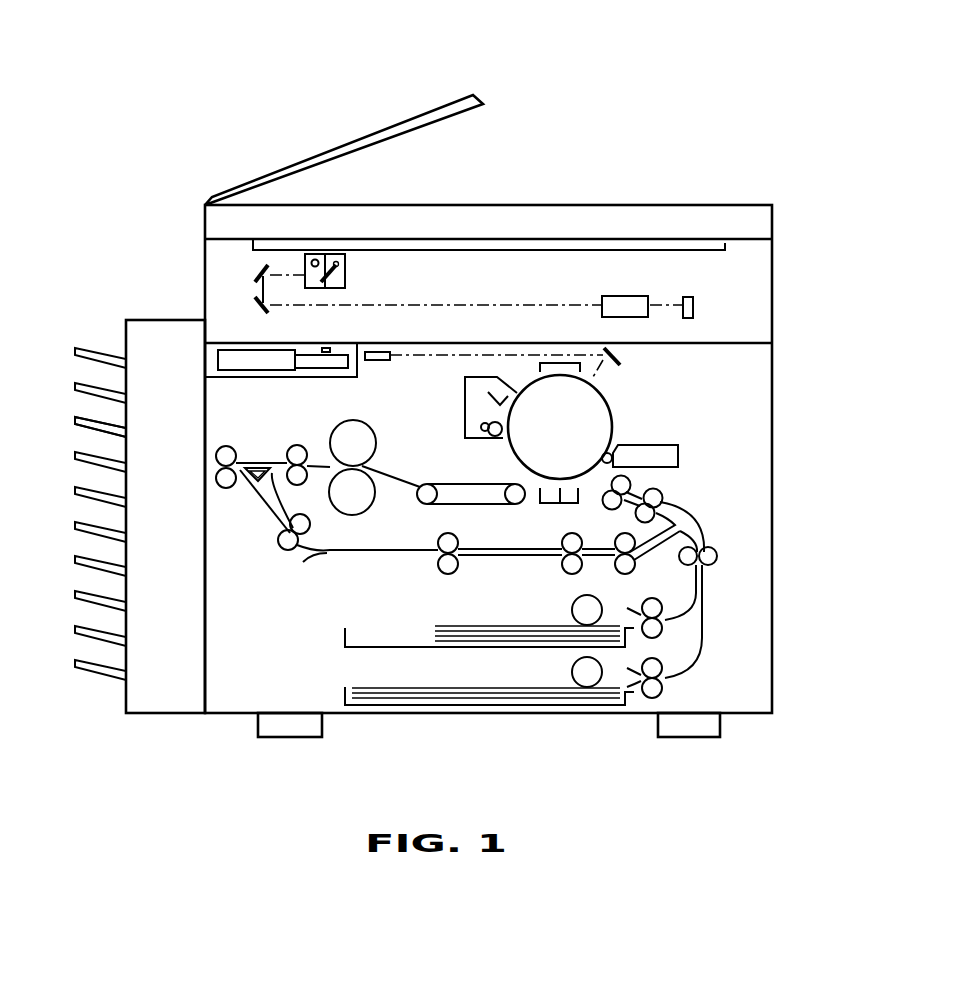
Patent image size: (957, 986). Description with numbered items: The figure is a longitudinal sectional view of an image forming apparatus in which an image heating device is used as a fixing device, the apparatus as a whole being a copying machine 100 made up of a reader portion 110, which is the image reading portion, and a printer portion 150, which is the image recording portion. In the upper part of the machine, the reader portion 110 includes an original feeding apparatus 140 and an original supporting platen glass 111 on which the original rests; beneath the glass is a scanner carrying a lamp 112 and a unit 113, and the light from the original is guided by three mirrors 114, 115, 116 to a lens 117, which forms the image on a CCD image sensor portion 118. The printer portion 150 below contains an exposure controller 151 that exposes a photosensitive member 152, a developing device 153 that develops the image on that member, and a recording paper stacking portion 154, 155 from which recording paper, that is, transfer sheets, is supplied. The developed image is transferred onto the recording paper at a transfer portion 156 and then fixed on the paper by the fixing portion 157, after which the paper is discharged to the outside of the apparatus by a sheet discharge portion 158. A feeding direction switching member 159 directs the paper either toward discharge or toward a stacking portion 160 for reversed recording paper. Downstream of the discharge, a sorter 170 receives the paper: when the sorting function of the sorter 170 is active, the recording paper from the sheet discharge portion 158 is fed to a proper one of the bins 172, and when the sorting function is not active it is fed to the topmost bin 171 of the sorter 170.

The copying machine 100 is at (563, 120).
The reader portion 110 is at (776, 298).
The original supporting platen glass 111 is at (650, 240).
The lamp 112 is at (345, 262).
The unit 113 is at (347, 277).
The mirror 114 is at (327, 286).
The mirror 115 is at (257, 273).
The mirror 116 is at (255, 302).
The lens 117 is at (626, 302).
The CCD image sensor portion 118 is at (695, 303).
The original feeding apparatus 140 is at (357, 142).
The printer portion 150 is at (777, 505).
The exposure controller 151 is at (322, 375).
The photosensitive member 152 is at (612, 405).
The developing device 153 is at (683, 455).
The recording paper stacking portion 154 is at (345, 635).
The recording paper stacking portion 155 is at (345, 692).
The transfer portion 156 is at (567, 507).
The fixing portion 157 is at (367, 440).
The sheet discharge portion 158 is at (232, 447).
The feeding direction switching member 159 is at (253, 483).
The stacking portion for reversed recording paper 160 is at (437, 563).
The sorter 170 is at (172, 700).
The topmost bin 171 is at (87, 350).
The bins 172 is at (75, 423).